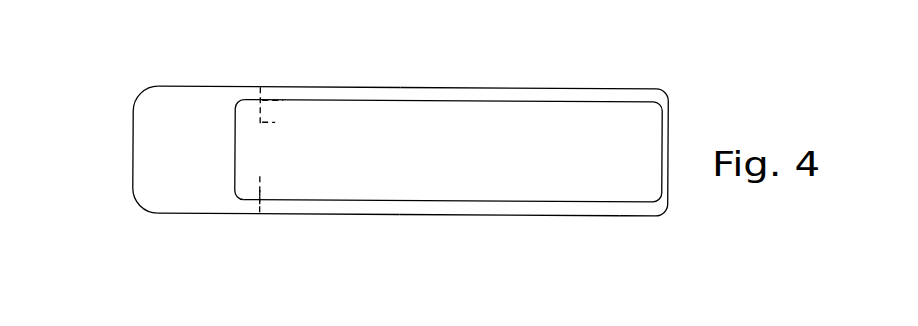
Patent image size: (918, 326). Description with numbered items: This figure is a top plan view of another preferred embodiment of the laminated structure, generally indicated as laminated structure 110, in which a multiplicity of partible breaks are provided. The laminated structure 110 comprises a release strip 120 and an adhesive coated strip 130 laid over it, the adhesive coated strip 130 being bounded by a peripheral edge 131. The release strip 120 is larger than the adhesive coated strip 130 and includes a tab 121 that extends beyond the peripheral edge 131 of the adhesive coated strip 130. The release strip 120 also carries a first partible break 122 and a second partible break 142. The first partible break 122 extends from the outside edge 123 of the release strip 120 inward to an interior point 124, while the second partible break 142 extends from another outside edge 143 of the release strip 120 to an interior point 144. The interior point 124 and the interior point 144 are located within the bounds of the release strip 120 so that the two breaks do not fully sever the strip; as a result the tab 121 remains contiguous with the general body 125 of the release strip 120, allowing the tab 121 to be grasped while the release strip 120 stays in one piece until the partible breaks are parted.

The laminated structure 110 is at (444, 57).
The release strip 120 is at (545, 88).
The tab 121 is at (133, 168).
The first partible break 122 is at (262, 191).
The outside edge 123 is at (228, 214).
The interior point 124 is at (262, 177).
The general body 125 is at (572, 215).
The adhesive coated strip 130 is at (605, 102).
The peripheral edge 131 is at (234, 125).
The second partible break 142 is at (263, 102).
The outside edge 143 is at (219, 87).
The interior point 144 is at (262, 123).